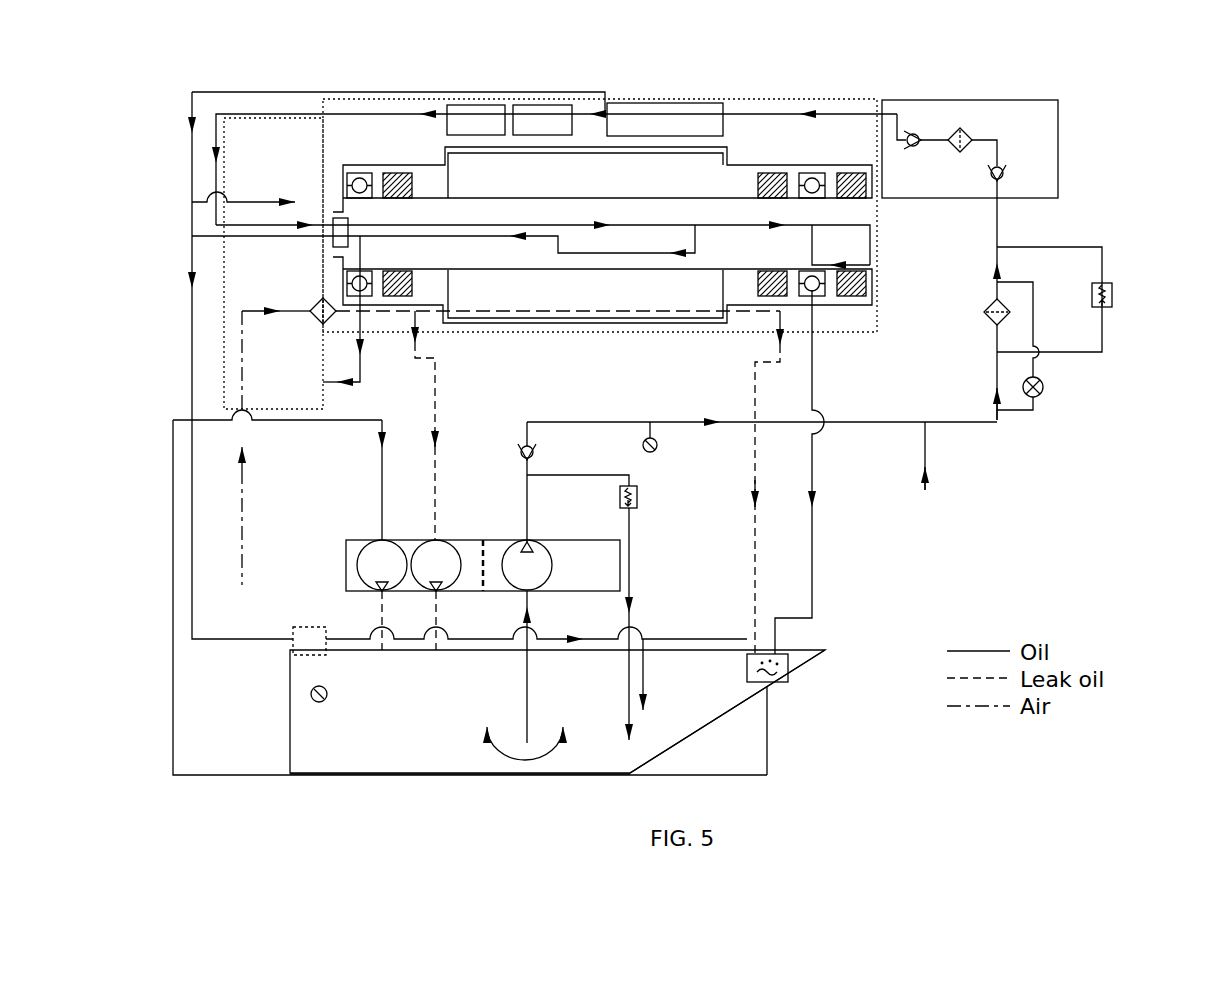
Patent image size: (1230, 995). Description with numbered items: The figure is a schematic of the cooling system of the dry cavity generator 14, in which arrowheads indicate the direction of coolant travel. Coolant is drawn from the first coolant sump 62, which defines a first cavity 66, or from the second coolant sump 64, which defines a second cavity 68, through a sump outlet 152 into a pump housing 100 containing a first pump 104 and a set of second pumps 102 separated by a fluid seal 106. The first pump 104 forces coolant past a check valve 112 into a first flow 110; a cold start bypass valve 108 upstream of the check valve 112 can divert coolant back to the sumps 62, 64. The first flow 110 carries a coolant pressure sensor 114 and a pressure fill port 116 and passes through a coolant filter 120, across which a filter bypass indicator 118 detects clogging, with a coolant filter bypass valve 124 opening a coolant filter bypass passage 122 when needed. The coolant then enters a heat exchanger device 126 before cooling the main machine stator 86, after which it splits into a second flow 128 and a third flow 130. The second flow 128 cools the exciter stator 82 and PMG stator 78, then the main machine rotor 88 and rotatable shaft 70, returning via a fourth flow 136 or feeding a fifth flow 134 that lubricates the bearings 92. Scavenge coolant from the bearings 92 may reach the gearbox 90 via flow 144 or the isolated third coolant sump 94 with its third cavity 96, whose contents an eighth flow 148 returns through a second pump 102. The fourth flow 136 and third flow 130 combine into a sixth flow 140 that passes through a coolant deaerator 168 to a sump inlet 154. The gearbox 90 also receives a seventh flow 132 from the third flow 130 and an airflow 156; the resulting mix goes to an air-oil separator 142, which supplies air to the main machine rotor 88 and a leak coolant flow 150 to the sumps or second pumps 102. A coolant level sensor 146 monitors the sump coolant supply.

The generator 14 is at (590, 74).
The first coolant sump 62 is at (422, 777).
The second coolant sump 64 is at (592, 776).
The first cavity 66 is at (393, 723).
The second cavity 68 is at (690, 698).
The rotatable shaft 70 is at (427, 197).
The PMG stator 78 is at (470, 105).
The exciter stator 82 is at (540, 105).
The main machine stator 86 is at (656, 103).
The main machine rotor 88 is at (620, 197).
The gearbox 90 is at (295, 157).
The bearings 92 is at (360, 173).
The third coolant sump 94 is at (802, 674).
The third cavity 96 is at (767, 673).
The pump housing 100 is at (445, 540).
The second pumps 102 is at (427, 559).
The first pump 104 is at (530, 563).
The fluid seal 106 is at (487, 560).
The cold start bypass valve 108 is at (637, 497).
The first flow 110 is at (762, 98).
The check valve 112 is at (917, 133).
The coolant pressure sensor 114 is at (657, 448).
The pressure fill port 116 is at (937, 458).
The filter bypass indicator 118 is at (1043, 387).
The coolant filter 120 is at (985, 308).
The coolant filter bypass passage 122 is at (1067, 247).
The coolant filter bypass valve 124 is at (1112, 295).
The heat exchanger device 126 is at (1043, 145).
The second flow 128 is at (312, 113).
The third flow 130 is at (217, 92).
The seventh flow 132 is at (236, 202).
The fifth flow 134 is at (762, 228).
The fourth flow 136 is at (602, 255).
The sixth flow 140 is at (192, 327).
The air-oil separator 142 is at (323, 298).
The flow 144 is at (360, 382).
The coolant level sensor 146 is at (312, 700).
The eighth flow 148 is at (382, 480).
The leak coolant flow 150 is at (435, 398).
The sump outlet 152 is at (525, 700).
The sump inlet 154 is at (643, 640).
The airflow 156 is at (244, 497).
The coolant deaerator 168 is at (308, 627).